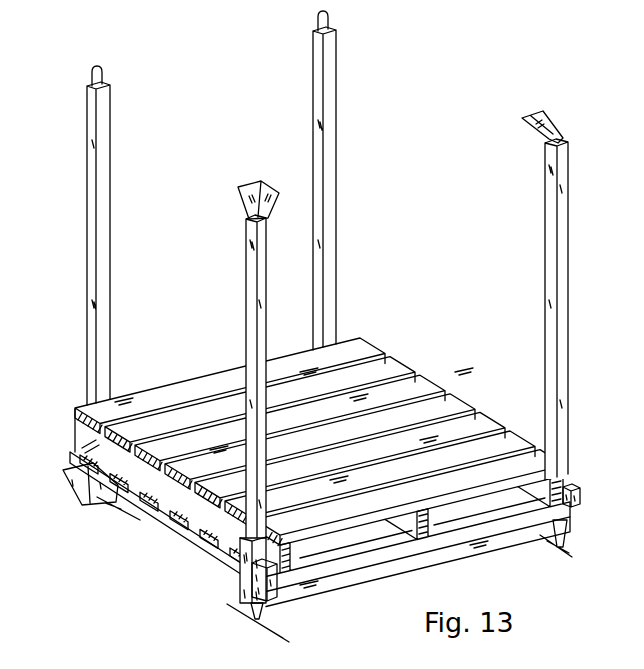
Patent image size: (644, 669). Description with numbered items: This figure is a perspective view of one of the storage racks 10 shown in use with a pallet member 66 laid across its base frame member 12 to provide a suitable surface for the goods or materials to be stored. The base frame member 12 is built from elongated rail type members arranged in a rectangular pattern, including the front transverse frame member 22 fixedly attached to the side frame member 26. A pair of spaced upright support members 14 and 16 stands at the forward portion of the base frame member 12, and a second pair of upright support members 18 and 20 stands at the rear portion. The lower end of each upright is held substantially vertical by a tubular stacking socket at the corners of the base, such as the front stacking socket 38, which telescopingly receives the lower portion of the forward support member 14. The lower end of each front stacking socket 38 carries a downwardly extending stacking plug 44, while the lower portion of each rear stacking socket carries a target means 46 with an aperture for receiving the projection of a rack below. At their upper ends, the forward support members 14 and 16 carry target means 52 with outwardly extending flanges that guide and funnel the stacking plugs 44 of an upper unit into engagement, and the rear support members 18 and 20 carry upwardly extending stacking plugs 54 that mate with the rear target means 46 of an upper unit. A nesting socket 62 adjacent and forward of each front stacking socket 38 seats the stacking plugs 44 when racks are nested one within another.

The storage rack 10 is at (457, 121).
The base frame member 12 is at (433, 556).
The forward upright support member 14 is at (252, 290).
The forward upright support member 16 is at (568, 253).
The rear upright support member 18 is at (106, 152).
The rear upright support member 20 is at (326, 86).
The front transverse frame member 22 is at (490, 532).
The side frame member 26 is at (163, 523).
The front stacking socket 38 is at (247, 574).
The stacking plug 44 is at (258, 618).
The target means 46 is at (77, 496).
The target means 52 is at (240, 206).
The stacking plug 54 is at (104, 76).
The nesting socket 62 is at (268, 578).
The pallet member 66 is at (396, 397).